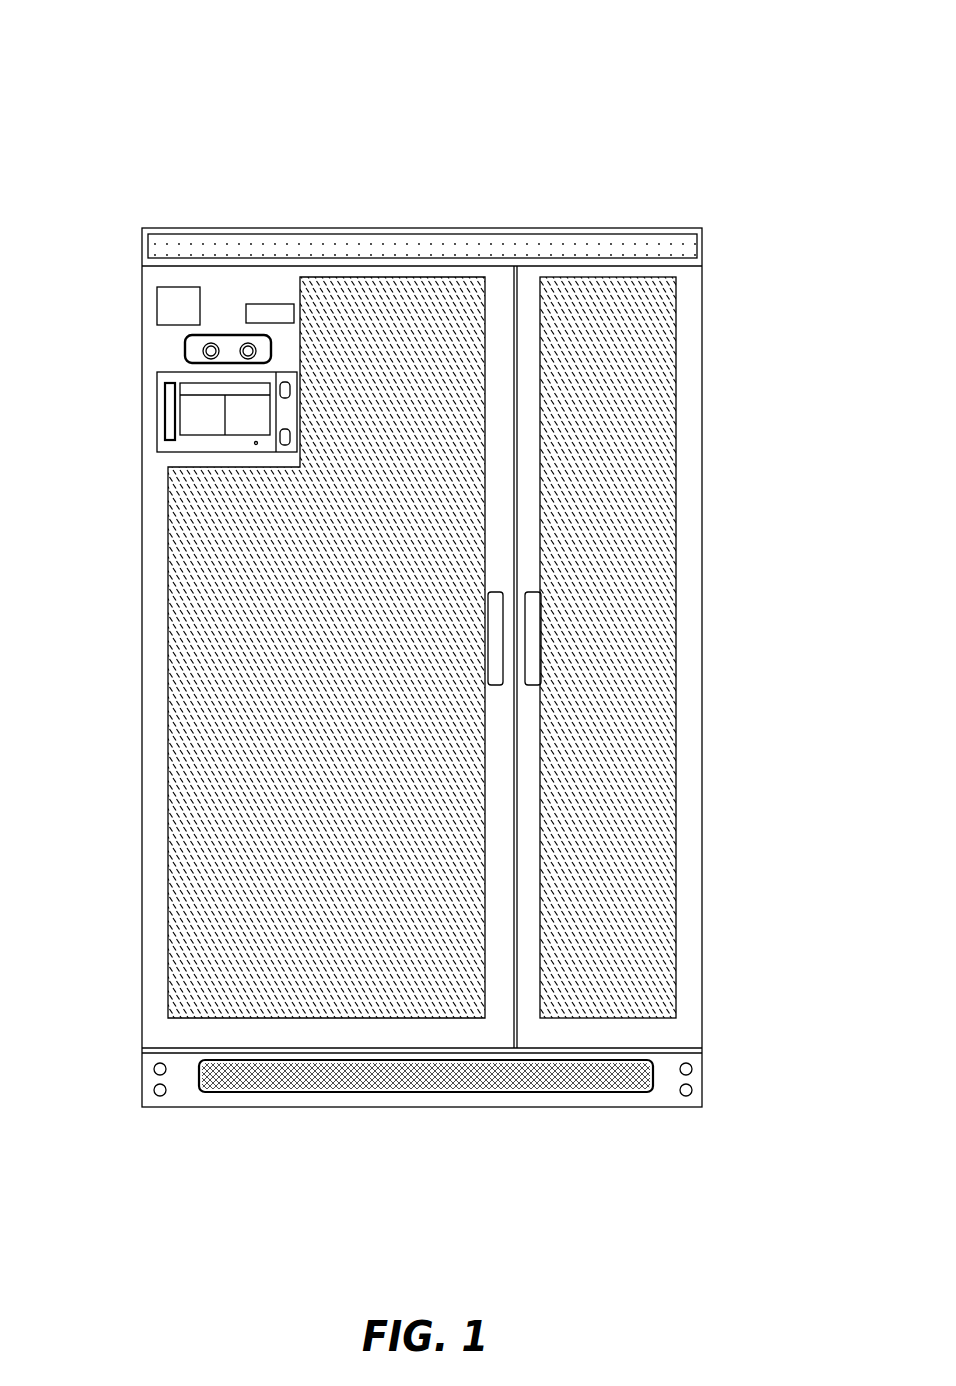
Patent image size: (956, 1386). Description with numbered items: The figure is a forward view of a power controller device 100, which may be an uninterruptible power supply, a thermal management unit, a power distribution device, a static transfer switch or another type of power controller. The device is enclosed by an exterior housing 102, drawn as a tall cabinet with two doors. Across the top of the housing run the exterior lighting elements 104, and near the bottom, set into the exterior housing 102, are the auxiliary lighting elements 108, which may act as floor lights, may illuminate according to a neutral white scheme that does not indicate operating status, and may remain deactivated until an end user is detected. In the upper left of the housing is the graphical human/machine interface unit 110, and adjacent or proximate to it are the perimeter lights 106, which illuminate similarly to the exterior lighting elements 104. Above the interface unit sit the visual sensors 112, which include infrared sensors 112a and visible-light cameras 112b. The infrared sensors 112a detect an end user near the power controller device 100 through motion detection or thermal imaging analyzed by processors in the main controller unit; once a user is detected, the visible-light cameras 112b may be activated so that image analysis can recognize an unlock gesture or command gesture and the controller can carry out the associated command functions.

The power controller device 100 is at (166, 40).
The exterior housing 102 is at (690, 500).
The exterior lighting elements 104 is at (548, 250).
The perimeter lights 106 is at (168, 412).
The auxiliary lighting elements 108 is at (555, 1077).
The graphical human/machine interface unit 110 is at (212, 425).
The visual sensors 112 is at (194, 350).
The infrared sensors 112a is at (207, 354).
The visible-light cameras 112b is at (252, 347).